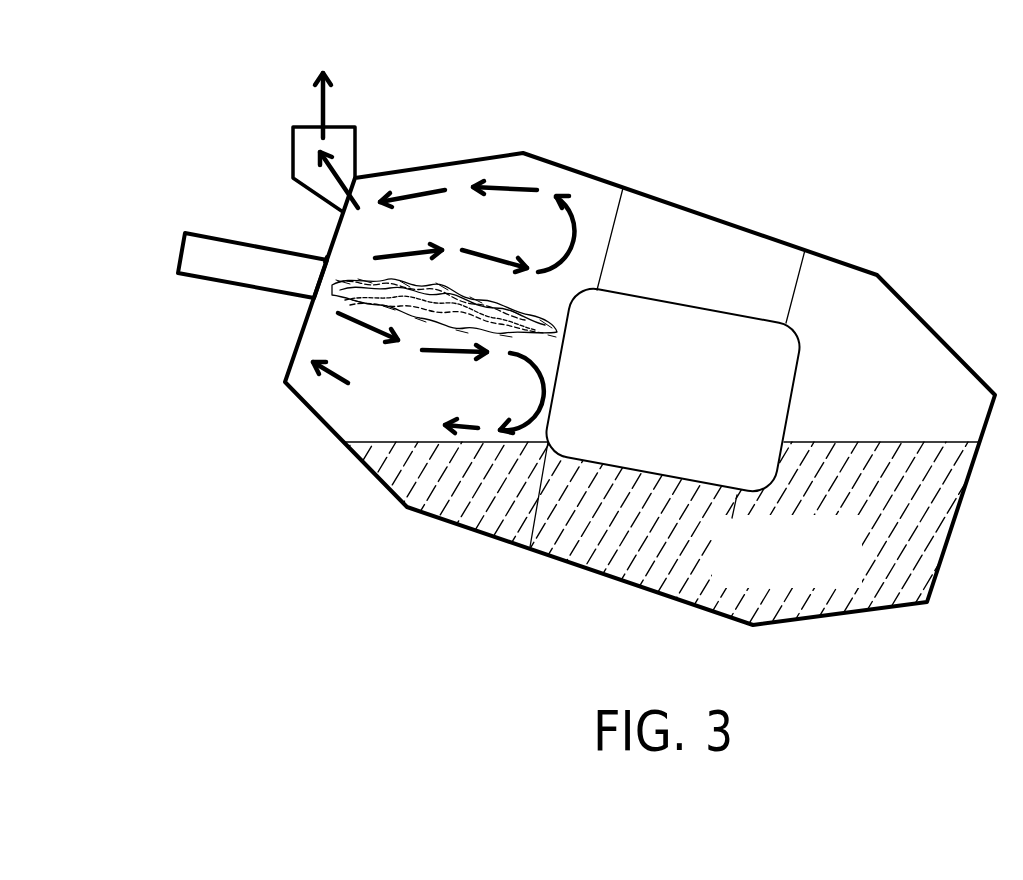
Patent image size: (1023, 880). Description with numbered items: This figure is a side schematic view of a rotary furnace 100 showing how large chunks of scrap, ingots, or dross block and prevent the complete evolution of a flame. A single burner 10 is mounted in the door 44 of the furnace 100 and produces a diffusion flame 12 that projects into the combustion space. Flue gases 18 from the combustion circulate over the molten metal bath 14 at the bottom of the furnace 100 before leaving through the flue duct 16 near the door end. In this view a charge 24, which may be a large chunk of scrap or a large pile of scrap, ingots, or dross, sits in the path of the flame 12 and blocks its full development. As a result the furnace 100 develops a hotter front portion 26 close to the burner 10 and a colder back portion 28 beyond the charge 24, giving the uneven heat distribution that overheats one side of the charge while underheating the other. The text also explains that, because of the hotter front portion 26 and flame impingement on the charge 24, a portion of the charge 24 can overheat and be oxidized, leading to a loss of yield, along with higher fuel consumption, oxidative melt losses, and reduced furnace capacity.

The rotary furnace 100 is at (832, 162).
The burner 10 is at (258, 283).
The diffusion flame 12 is at (523, 301).
The molten metal bath 14 is at (801, 561).
The flue duct 16 is at (290, 163).
The flue gases 18 is at (327, 98).
The charge 24 is at (685, 404).
The hotter front portion 26 is at (413, 408).
The colder back portion 28 is at (901, 406).
The door 44 is at (327, 242).